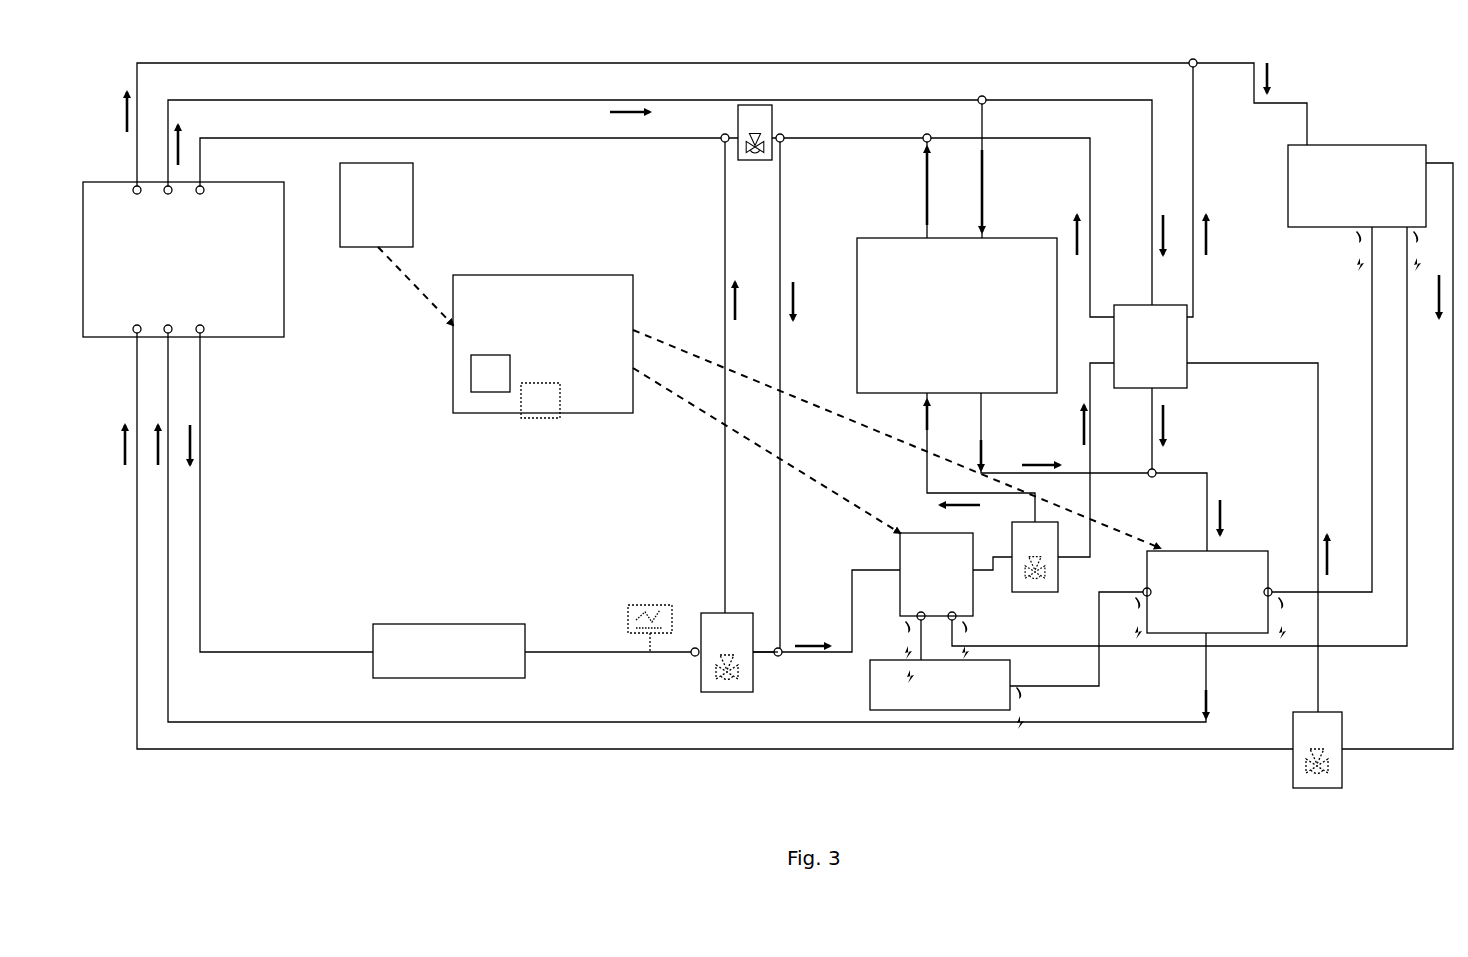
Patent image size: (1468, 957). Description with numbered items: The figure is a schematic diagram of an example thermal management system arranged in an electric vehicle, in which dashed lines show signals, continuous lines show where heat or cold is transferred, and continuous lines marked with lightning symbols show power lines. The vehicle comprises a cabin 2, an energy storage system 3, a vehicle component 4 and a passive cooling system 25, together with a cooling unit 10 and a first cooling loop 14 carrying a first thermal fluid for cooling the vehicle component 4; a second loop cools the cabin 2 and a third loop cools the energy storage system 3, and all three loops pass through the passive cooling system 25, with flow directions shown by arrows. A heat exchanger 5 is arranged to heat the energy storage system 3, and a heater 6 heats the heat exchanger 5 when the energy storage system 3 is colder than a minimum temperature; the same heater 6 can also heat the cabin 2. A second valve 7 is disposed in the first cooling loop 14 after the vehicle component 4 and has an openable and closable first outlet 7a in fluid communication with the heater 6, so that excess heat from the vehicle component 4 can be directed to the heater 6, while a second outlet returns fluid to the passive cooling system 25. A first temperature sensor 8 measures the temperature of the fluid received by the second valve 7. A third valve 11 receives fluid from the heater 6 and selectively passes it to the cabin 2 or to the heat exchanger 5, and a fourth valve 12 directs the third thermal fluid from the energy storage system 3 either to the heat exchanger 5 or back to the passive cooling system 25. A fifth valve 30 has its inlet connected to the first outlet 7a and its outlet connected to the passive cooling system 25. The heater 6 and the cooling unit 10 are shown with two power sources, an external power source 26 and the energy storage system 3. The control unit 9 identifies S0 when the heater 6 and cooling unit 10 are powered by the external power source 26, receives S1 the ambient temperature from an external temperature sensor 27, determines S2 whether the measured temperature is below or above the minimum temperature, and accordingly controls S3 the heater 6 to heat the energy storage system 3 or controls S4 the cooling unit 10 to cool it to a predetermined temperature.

The cabin 2 is at (957, 315).
The energy storage system 3 is at (1357, 186).
The vehicle component 4 is at (449, 651).
The heat exchanger 5 is at (1150, 346).
The heater 6 is at (936, 574).
The second valve 7 is at (727, 652).
The first outlet 7a is at (757, 660).
The first temperature sensor 8 is at (632, 640).
The control unit 9 is at (543, 344).
The cooling unit 10 is at (1207, 592).
The third valve 11 is at (1035, 557).
The fourth valve 12 is at (1317, 750).
The first cooling loop 14 is at (288, 672).
The passive cooling system 25 is at (183, 259).
The external power source 26 is at (940, 685).
The external temperature sensor 27 is at (376, 205).
The fifth valve 30 is at (755, 132).
The identifying step S0 is at (540, 400).
The receiving step S1 is at (415, 286).
The determining step S2 is at (490, 373).
The heating control step S3 is at (766, 450).
The cooling control step S4 is at (896, 435).